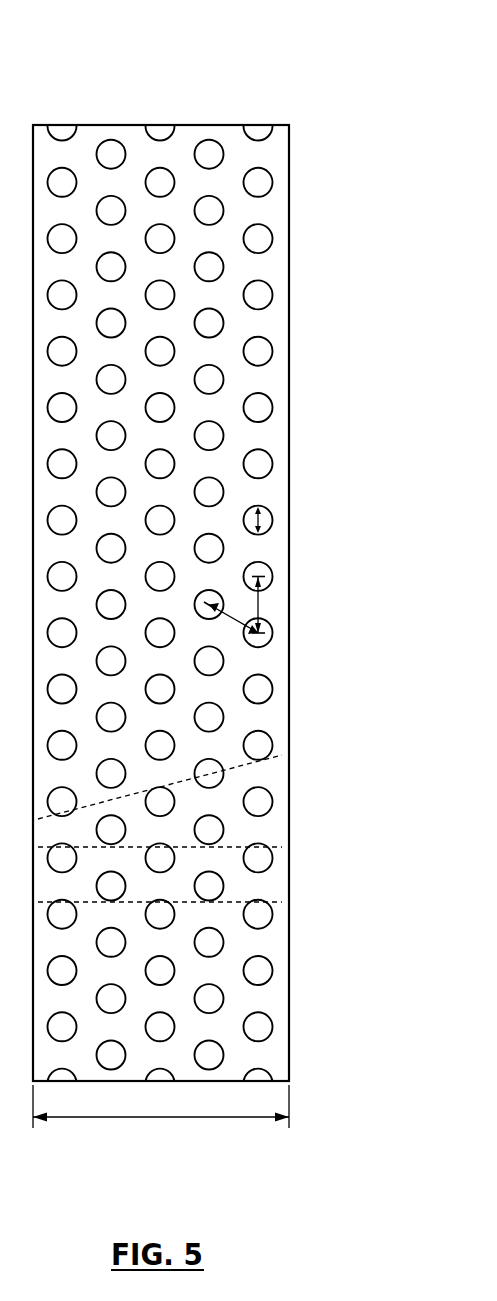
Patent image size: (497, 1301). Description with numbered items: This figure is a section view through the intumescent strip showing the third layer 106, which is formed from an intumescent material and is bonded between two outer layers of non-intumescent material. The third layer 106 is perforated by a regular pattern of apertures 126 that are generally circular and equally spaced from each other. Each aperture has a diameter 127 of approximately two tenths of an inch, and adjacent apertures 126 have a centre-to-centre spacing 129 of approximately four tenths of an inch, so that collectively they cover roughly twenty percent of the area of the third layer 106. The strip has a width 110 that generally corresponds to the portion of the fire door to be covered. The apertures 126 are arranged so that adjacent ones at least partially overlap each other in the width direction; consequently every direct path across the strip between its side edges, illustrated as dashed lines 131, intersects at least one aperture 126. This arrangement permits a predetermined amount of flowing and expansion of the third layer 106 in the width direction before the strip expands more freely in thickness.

The third layer 106 is at (233, 90).
The apertures 126 is at (266, 282).
The diameter 127 is at (272, 520).
The centre-to-centre spacing 129 is at (237, 618).
The dashed lines 131 is at (253, 763).
The width 110 is at (155, 1117).